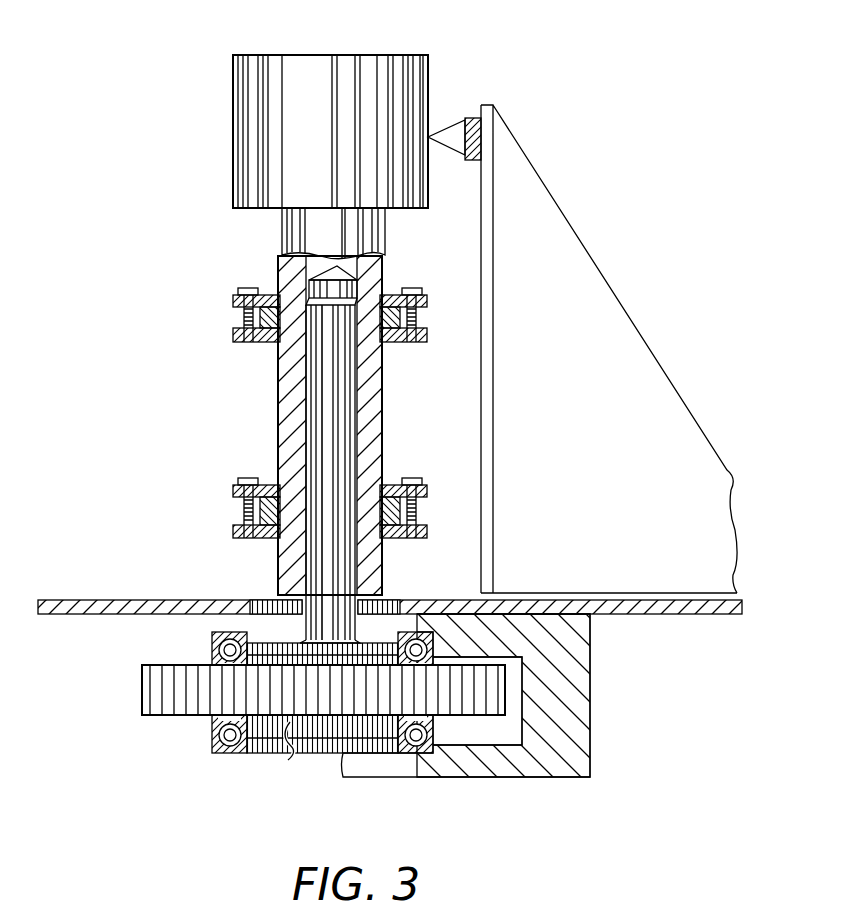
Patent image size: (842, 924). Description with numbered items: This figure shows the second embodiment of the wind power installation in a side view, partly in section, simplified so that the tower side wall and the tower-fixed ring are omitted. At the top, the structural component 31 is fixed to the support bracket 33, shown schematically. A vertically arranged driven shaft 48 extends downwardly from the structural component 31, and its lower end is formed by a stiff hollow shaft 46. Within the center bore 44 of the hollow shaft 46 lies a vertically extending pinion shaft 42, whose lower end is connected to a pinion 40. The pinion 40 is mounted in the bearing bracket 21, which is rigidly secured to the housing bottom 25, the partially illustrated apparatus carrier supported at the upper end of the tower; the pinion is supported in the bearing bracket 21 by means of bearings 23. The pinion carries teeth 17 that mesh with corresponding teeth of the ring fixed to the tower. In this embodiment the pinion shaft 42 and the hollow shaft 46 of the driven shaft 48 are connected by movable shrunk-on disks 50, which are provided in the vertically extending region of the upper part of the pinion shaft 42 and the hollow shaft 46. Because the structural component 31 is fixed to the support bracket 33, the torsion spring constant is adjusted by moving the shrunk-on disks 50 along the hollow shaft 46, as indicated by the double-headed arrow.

The teeth 17 is at (512, 705).
The bearing bracket 21 is at (580, 708).
The bearings 23 is at (222, 648).
The housing bottom 25 is at (640, 625).
The structural component 31 is at (403, 72).
The support bracket 33 is at (600, 300).
The pinion 40 is at (288, 760).
The pinion shaft 42 is at (318, 380).
The center bore 44 is at (316, 443).
The hollow shaft 46 is at (286, 420).
The driven shaft 48 is at (385, 238).
The shrunk-on disks 50 is at (268, 296).